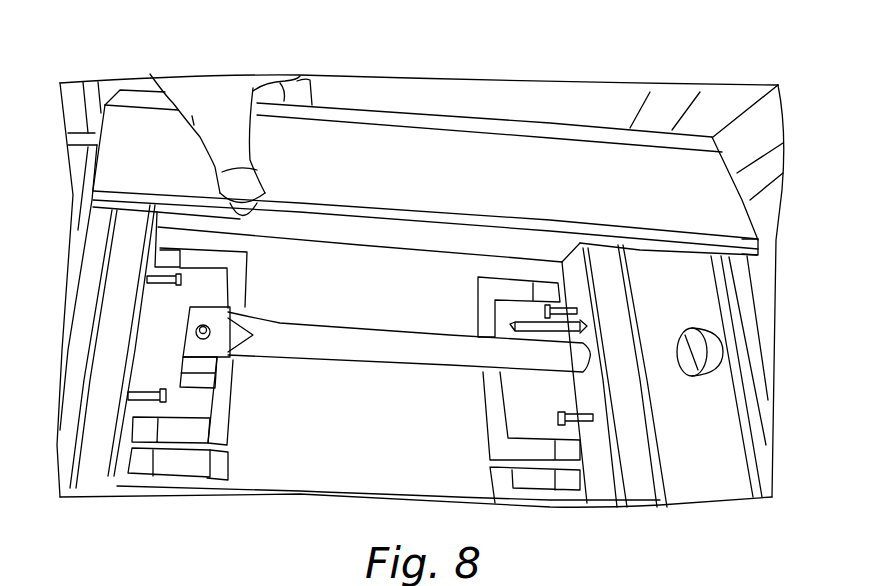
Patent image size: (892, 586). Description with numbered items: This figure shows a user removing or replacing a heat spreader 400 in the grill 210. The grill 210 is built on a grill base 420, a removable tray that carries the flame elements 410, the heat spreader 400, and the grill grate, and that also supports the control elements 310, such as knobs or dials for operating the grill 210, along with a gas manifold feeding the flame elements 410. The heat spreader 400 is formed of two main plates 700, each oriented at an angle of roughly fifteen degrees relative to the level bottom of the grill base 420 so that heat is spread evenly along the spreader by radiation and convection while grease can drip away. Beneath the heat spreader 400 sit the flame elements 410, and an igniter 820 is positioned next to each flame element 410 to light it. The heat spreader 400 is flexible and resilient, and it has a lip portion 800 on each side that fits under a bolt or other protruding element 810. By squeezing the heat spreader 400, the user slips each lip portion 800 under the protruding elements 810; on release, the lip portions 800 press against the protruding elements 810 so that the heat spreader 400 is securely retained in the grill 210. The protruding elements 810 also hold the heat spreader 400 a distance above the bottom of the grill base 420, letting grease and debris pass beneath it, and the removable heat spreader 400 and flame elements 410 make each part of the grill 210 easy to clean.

The grill 210 is at (625, 63).
The main plate 700 is at (132, 101).
The heat spreader 400 is at (397, 143).
The grill base 420 is at (332, 237).
The lip portion 800 is at (758, 248).
The flame element 410 is at (347, 345).
The protruding element 810 is at (147, 277).
The igniter 820 is at (588, 327).
The control element 310 is at (724, 351).